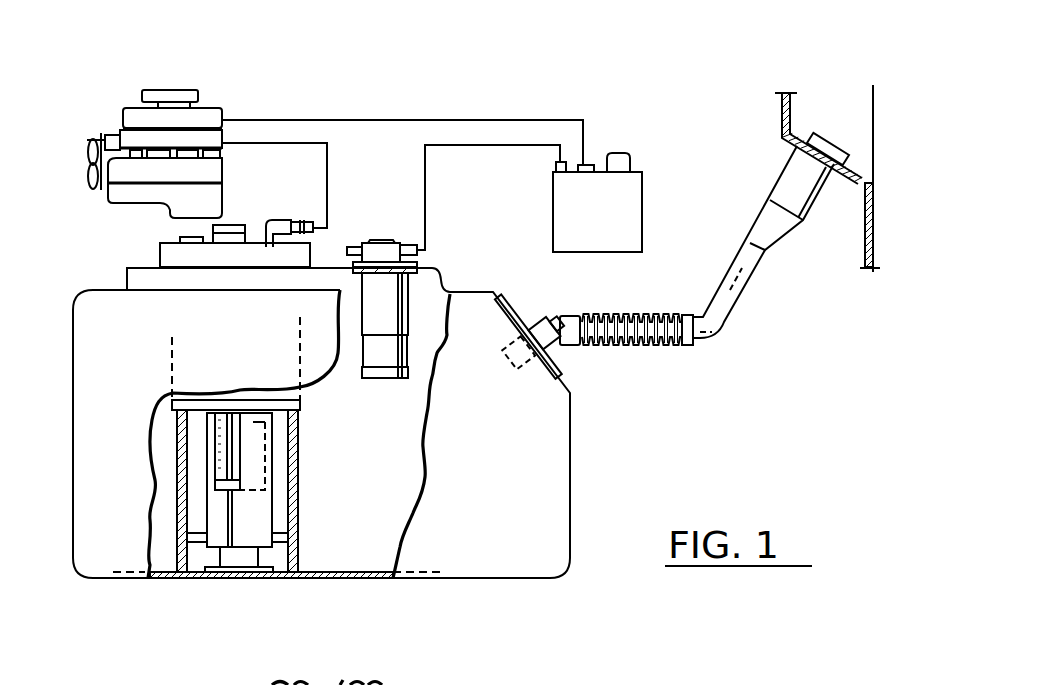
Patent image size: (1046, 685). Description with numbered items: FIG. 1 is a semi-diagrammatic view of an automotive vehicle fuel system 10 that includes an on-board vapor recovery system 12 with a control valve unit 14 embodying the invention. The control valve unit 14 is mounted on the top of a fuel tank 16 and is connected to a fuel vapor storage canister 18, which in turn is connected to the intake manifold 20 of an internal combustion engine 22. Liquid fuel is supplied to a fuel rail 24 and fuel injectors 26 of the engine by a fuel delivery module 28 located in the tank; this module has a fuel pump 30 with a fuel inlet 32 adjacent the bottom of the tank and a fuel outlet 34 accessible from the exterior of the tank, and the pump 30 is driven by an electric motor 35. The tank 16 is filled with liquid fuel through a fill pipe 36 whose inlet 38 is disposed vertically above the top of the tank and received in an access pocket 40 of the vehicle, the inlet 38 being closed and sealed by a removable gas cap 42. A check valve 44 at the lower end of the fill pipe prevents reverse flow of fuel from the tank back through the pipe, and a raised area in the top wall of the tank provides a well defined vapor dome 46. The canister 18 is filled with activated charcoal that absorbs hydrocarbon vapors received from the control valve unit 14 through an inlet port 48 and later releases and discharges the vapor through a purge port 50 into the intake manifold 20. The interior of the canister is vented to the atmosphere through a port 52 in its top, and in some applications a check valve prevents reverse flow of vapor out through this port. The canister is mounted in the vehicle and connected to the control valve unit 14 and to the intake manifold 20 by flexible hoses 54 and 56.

The vehicle fuel system 10 is at (640, 72).
The on-board vapor recovery system 12 is at (377, 222).
The control valve unit 14 is at (383, 378).
The fuel tank 16 is at (553, 460).
The fuel vapor storage canister 18 is at (627, 208).
The intake manifold 20 is at (203, 117).
The internal combustion engine 22 is at (132, 200).
The fuel rail 24 is at (212, 138).
The fuel injectors 26 is at (180, 160).
The fuel delivery module 28 is at (297, 468).
The fuel pump 30 is at (255, 507).
The fuel inlet 32 is at (257, 560).
The fuel outlet 34 is at (310, 282).
The electric motor 35 is at (257, 437).
The fill pipe 36 is at (722, 315).
The inlet 38 is at (807, 140).
The access pocket 40 is at (852, 178).
The removable gas cap 42 is at (832, 135).
The check valve 44 is at (525, 372).
The vapor dome 46 is at (447, 288).
The inlet port 48 is at (555, 170).
The purge port 50 is at (590, 163).
The port 52 is at (628, 155).
The flexible hose 54 is at (470, 146).
The flexible hose 56 is at (467, 120).